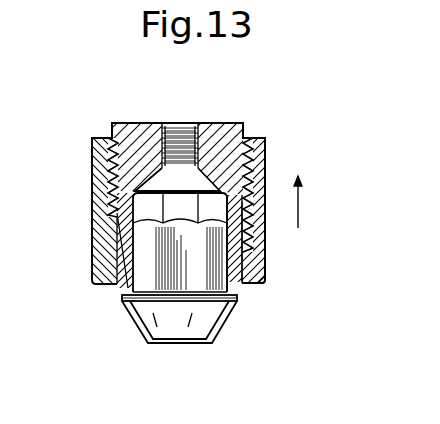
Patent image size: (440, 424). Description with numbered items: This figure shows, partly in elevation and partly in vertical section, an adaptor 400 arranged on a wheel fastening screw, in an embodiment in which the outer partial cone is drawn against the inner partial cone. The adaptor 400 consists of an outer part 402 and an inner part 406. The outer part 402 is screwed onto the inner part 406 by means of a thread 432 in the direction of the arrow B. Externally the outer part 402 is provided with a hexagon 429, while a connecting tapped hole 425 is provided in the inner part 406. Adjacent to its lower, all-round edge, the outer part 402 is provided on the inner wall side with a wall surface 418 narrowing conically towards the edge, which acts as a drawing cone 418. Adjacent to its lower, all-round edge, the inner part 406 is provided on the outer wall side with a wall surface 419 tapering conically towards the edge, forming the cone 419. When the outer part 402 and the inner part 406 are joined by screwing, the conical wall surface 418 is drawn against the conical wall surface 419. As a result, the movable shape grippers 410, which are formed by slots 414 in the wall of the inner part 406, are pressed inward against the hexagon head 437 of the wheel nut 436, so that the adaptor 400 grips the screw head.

The adaptor 400 is at (284, 170).
The outer part 402 is at (103, 182).
The inner part 406 is at (145, 140).
The shape grippers 410 is at (123, 292).
The slots 414 is at (162, 210).
The drawing cone 418 is at (262, 280).
The cone 419 is at (224, 262).
The connecting tapped hole 425 is at (183, 140).
The hexagon 429 is at (268, 160).
The thread 432 is at (244, 128).
The wheel nut 436 is at (140, 327).
The hexagon head 437 is at (239, 306).
The arrow B is at (299, 200).